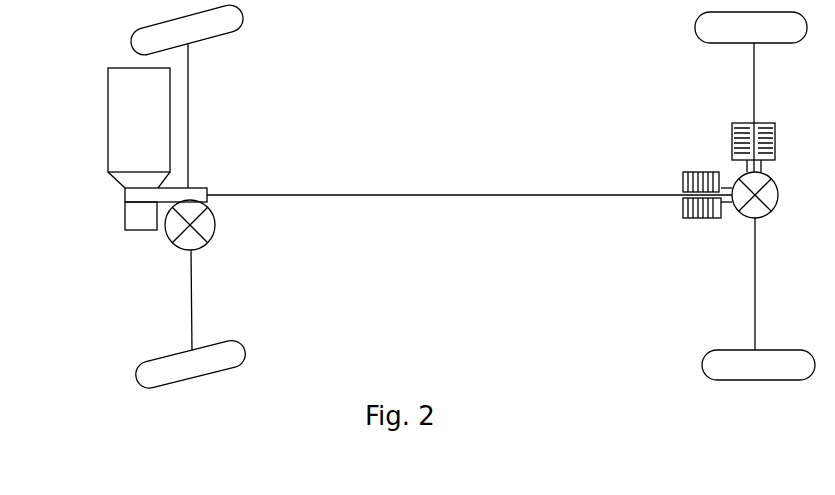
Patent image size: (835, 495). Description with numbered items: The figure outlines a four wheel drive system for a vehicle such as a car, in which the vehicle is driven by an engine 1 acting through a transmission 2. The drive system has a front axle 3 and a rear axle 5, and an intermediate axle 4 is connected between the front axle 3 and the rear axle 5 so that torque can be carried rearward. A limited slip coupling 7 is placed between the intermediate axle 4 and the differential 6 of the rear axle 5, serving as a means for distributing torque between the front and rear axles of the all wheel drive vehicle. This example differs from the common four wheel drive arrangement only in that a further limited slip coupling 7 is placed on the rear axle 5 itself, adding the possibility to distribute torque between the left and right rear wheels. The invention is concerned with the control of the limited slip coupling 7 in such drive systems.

The engine 1 is at (117, 152).
The transmission 2 is at (190, 193).
The front axle 3 is at (190, 110).
The intermediate axle 4 is at (430, 193).
The rear axle 5 is at (755, 297).
The differential 6 is at (207, 227).
The limited slip coupling 7 is at (688, 175).